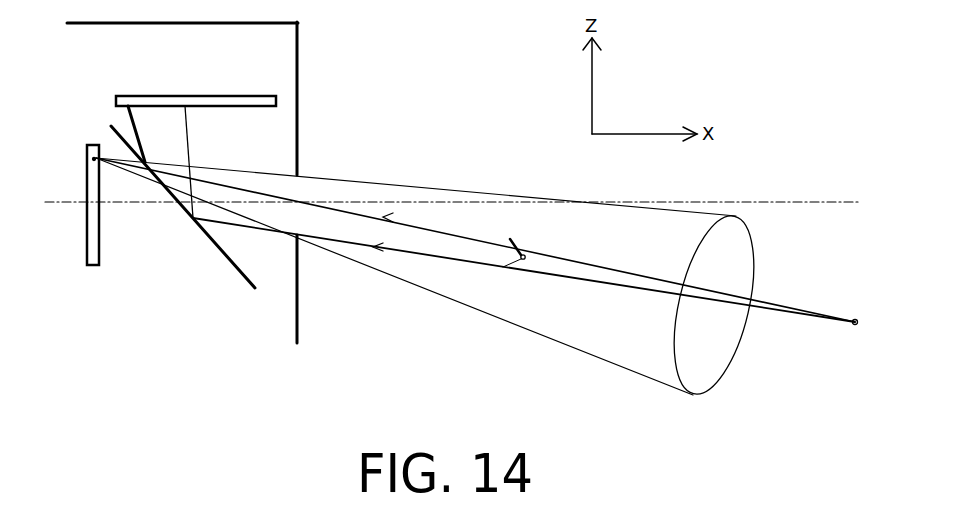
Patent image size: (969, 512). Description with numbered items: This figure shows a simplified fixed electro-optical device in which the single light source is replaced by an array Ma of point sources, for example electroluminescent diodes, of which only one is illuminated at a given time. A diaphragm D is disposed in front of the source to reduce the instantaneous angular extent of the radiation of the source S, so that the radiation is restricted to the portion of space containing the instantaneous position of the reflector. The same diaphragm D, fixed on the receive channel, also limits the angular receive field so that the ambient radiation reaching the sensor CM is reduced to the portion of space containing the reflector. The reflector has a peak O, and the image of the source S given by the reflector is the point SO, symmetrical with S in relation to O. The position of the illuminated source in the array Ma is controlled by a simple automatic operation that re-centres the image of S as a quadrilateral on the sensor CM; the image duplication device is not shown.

The sensor CM is at (245, 95).
The point source S is at (92, 159).
The array of point sources Ma is at (100, 258).
The diaphragm D is at (299, 298).
The peak of the cube corner reflector O is at (524, 254).
The image of the source SO is at (870, 323).